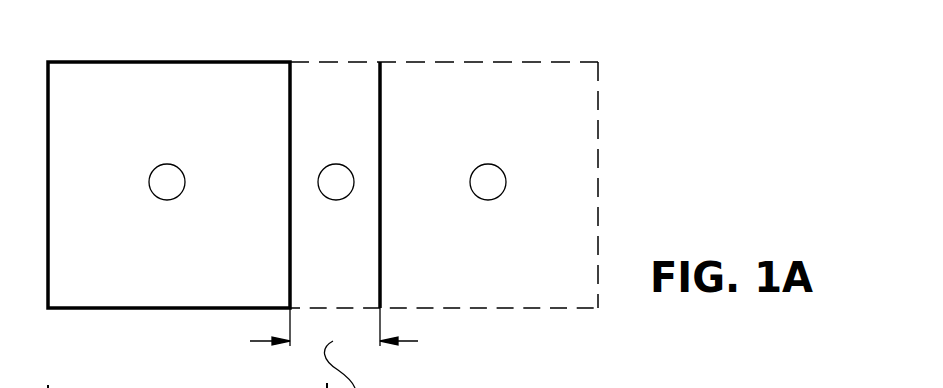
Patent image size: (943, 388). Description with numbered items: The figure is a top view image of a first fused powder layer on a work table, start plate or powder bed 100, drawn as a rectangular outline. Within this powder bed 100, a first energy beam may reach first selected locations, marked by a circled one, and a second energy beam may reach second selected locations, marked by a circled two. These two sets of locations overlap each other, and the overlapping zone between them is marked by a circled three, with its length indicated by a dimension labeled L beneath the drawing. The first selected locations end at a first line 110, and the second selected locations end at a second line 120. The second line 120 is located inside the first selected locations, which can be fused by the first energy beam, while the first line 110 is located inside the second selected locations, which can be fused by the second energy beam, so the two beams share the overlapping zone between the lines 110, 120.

The powder bed 100 is at (398, 225).
The first line 110 is at (380, 93).
The second line 120 is at (290, 92).